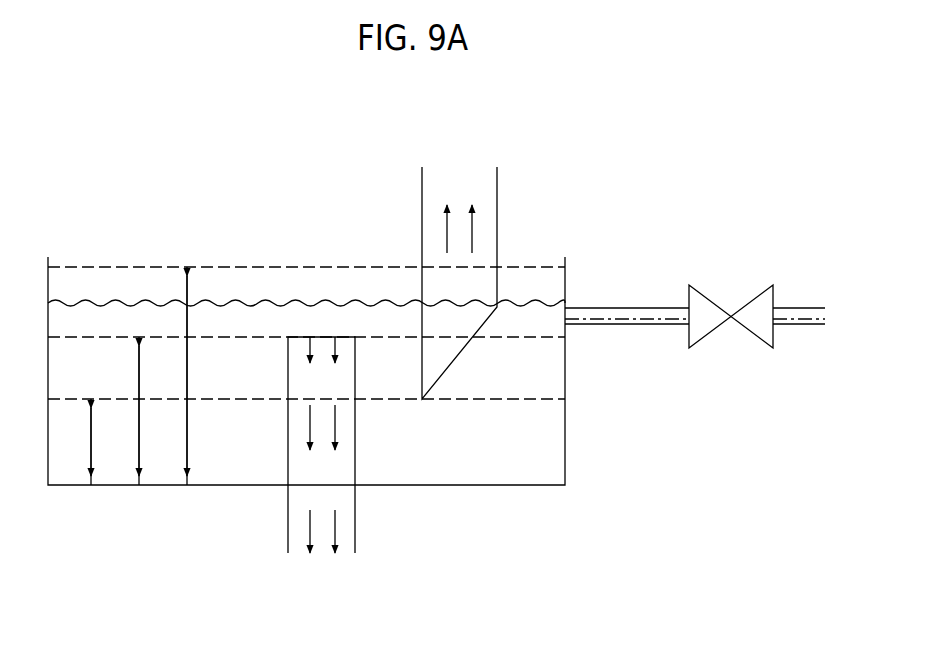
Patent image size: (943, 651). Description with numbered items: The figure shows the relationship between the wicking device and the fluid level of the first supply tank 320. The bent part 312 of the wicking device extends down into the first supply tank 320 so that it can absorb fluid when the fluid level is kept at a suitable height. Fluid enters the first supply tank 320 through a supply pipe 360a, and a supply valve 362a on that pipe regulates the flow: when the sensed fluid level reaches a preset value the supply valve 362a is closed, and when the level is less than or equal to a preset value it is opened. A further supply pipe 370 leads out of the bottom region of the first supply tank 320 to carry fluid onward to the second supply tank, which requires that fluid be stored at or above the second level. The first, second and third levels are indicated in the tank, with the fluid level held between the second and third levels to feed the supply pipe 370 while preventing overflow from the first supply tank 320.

The bent part 312 is at (488, 200).
The first supply tank 320 is at (565, 435).
The supply pipe 360a is at (807, 315).
The supply valve 362a is at (709, 302).
The supply pipe 370 is at (346, 528).